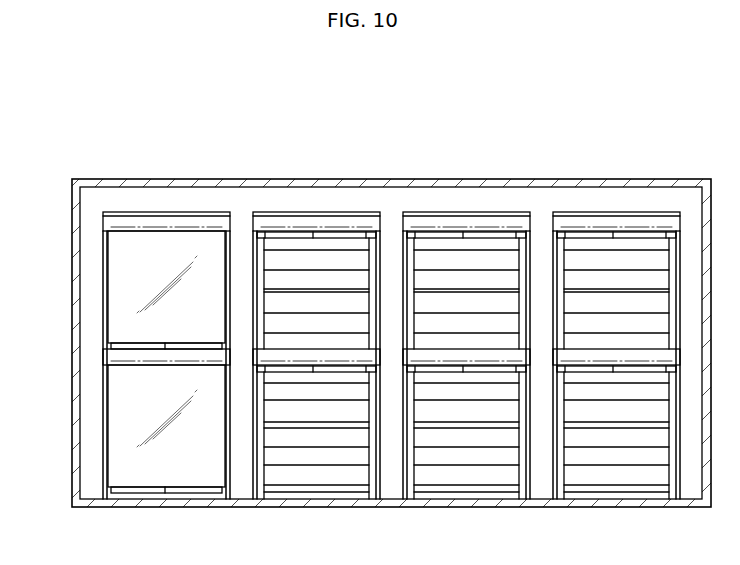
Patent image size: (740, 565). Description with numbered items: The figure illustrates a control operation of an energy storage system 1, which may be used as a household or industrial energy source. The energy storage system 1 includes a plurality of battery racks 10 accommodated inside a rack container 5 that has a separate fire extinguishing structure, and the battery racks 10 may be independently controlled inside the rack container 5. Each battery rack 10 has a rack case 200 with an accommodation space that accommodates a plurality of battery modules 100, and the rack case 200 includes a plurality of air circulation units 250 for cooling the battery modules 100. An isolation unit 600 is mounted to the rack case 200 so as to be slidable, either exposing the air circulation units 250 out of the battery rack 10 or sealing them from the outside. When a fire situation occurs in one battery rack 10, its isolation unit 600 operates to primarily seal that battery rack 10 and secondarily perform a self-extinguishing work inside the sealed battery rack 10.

The energy storage system 1 is at (136, 137).
The rack container 5 is at (455, 179).
The battery rack 10 is at (196, 205).
The battery module 100 is at (328, 250).
The isolation unit 600 is at (0, 268).
The air circulation unit 250 is at (6, 410).
The rack case 200 is at (156, 520).